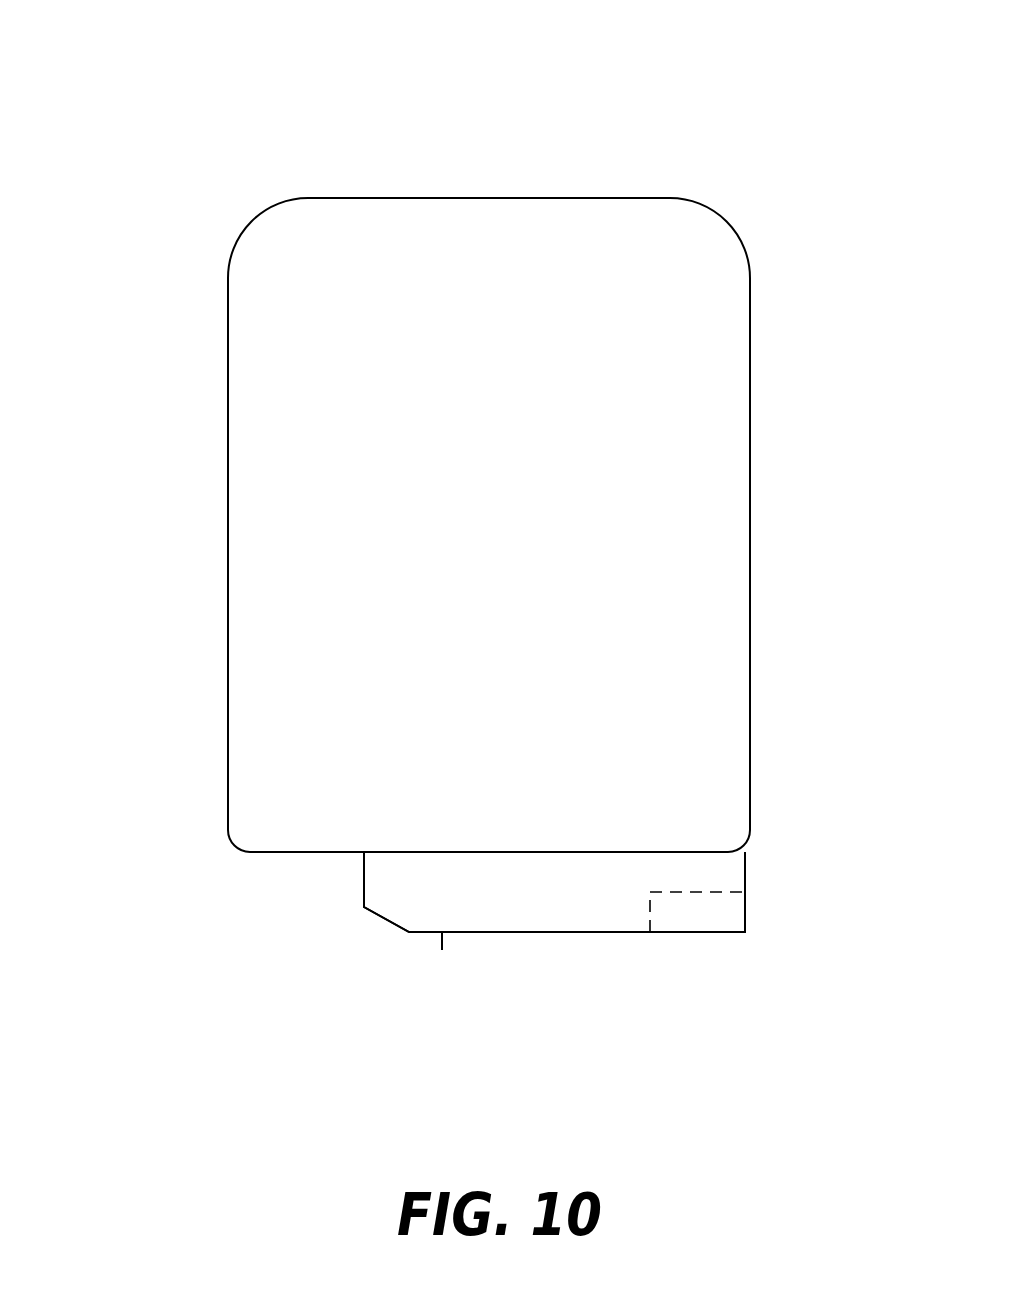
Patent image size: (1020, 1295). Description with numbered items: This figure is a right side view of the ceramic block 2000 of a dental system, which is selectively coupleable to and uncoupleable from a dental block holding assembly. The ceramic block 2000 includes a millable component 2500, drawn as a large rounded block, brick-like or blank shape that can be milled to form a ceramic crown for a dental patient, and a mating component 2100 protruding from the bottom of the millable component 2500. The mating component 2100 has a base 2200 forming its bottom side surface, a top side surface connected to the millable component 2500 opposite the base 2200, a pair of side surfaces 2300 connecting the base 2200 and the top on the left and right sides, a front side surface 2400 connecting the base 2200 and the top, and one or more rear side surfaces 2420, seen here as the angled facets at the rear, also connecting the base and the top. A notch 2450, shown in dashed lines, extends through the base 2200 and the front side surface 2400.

The ceramic block 2000 is at (500, 566).
The mating component 2100 is at (472, 985).
The base 2200 is at (442, 950).
The side surfaces 2300 is at (553, 891).
The front side surface 2400 is at (551, 985).
The rear side surfaces 2420 is at (364, 877).
The notch 2450 is at (702, 912).
The millable component 2500 is at (750, 411).